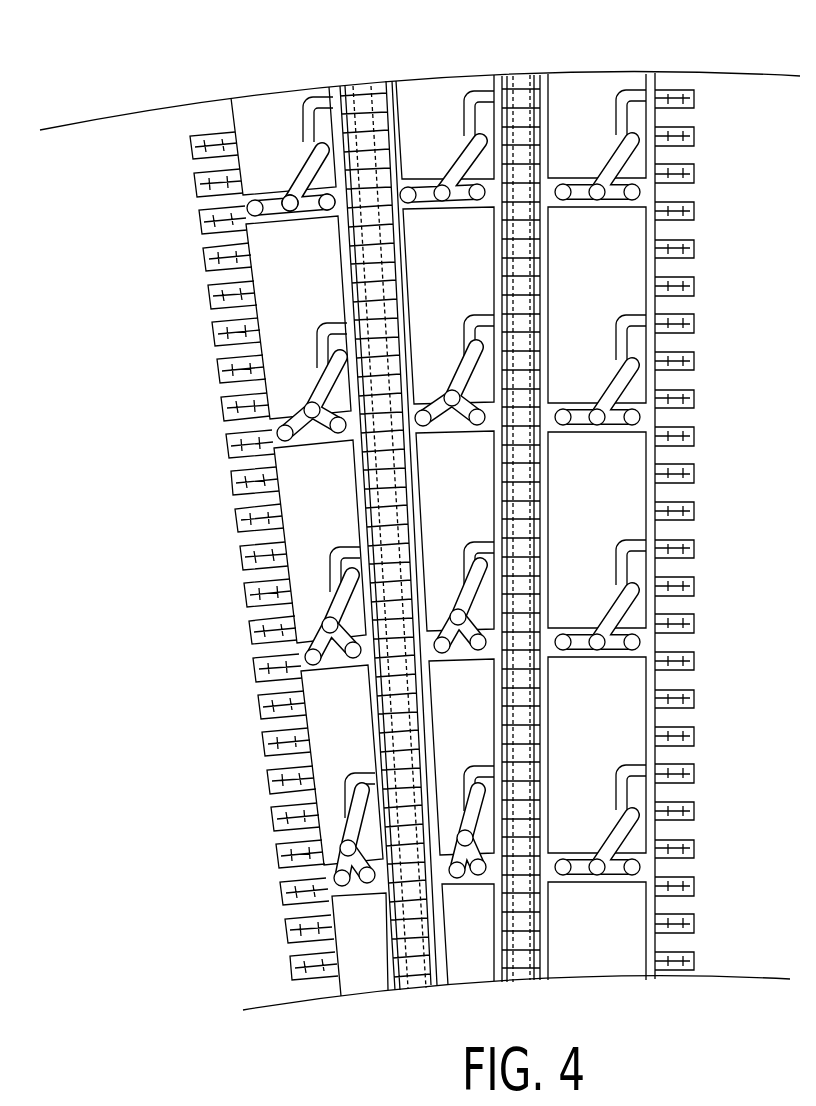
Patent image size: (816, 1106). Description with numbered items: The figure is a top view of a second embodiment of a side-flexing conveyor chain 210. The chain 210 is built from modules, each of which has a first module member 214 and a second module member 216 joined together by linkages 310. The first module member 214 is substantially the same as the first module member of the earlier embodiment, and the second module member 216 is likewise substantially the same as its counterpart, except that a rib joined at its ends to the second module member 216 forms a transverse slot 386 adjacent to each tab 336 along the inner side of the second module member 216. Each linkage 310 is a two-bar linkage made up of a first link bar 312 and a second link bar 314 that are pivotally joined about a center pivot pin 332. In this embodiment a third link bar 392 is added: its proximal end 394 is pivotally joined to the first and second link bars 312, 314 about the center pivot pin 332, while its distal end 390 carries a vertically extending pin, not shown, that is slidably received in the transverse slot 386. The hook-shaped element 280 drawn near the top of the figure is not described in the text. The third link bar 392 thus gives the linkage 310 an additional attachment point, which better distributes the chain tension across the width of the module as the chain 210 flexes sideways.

The chain 210 is at (420, 541).
The first module member 214 is at (277, 113).
The second module member 216 is at (373, 501).
The transverse slot 386 is at (327, 120).
The hook member 280 is at (313, 98).
The distal end 390 is at (327, 160).
The third link bar 392 is at (300, 187).
The first link bar 312 is at (258, 631).
The proximal end 394 is at (300, 197).
The second link bar 314 is at (333, 207).
The center pivot pin 332 is at (290, 215).
The tab 336 is at (298, 317).
The linkage 310 is at (320, 541).